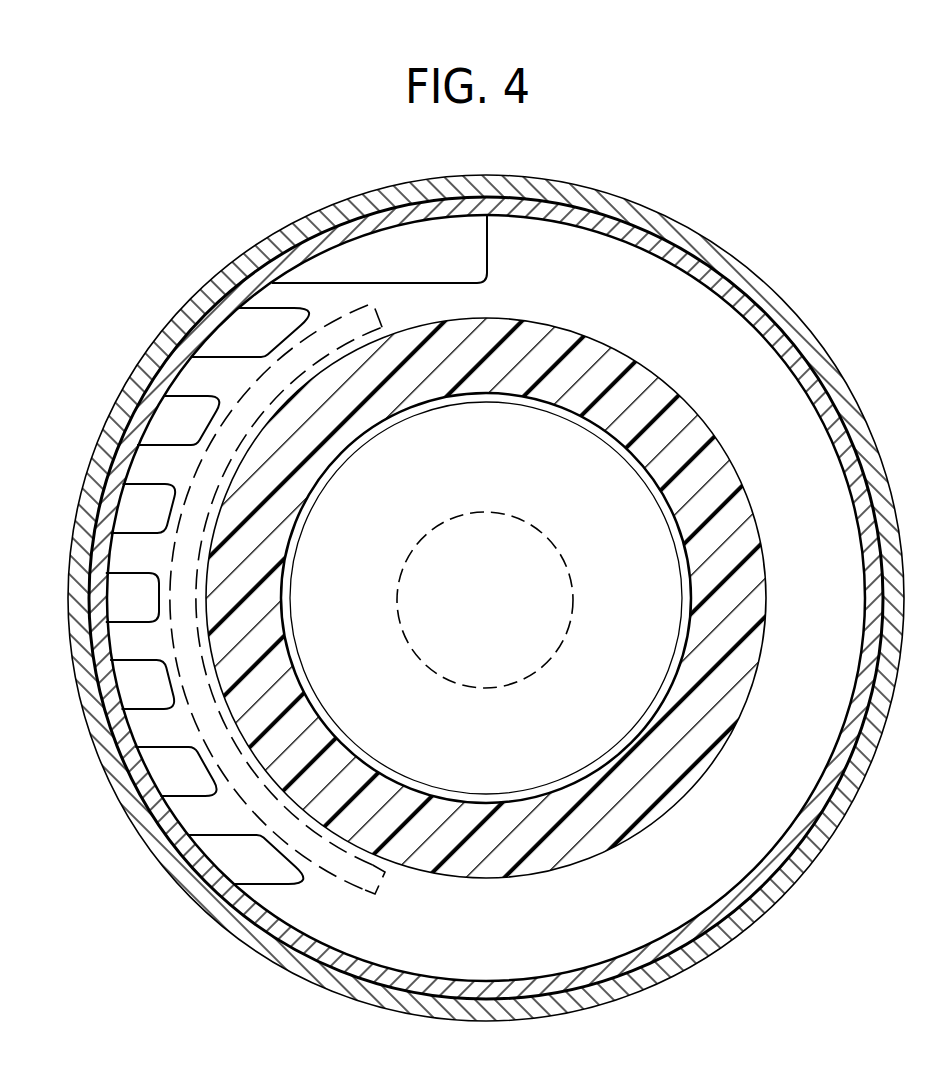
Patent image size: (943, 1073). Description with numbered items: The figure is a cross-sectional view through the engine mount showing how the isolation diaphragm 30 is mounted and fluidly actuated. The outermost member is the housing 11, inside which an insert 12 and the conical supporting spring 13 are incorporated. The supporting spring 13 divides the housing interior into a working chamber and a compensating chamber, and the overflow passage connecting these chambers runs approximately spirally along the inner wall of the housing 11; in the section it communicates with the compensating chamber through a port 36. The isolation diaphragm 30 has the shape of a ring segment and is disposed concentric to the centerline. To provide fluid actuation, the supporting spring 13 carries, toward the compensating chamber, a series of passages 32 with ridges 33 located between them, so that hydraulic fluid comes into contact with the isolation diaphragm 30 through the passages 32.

The housing 11 is at (752, 282).
The insert 12 is at (822, 395).
The supporting spring 13 is at (735, 546).
The isolation diaphragm 30 is at (365, 908).
The passages 32 is at (223, 350).
The ridges 33 is at (175, 836).
The port 36 is at (386, 245).